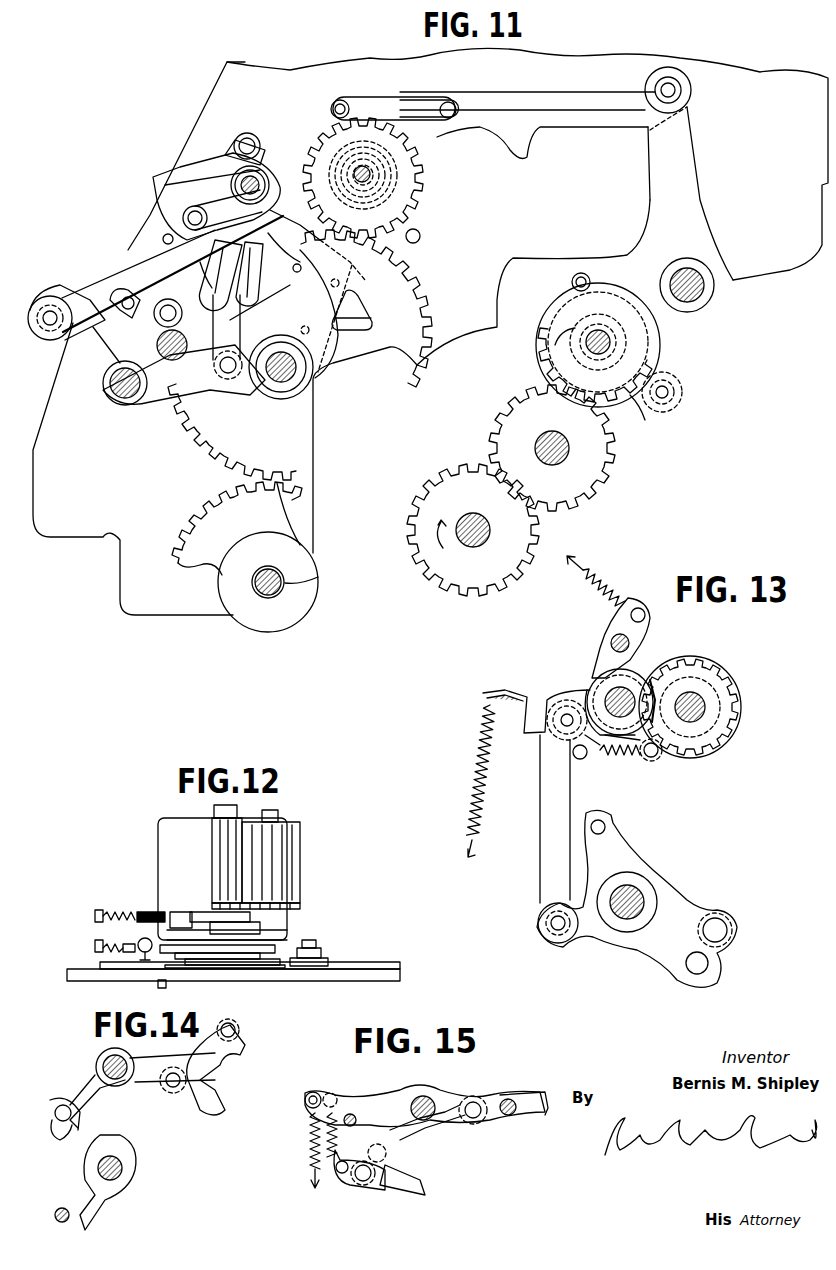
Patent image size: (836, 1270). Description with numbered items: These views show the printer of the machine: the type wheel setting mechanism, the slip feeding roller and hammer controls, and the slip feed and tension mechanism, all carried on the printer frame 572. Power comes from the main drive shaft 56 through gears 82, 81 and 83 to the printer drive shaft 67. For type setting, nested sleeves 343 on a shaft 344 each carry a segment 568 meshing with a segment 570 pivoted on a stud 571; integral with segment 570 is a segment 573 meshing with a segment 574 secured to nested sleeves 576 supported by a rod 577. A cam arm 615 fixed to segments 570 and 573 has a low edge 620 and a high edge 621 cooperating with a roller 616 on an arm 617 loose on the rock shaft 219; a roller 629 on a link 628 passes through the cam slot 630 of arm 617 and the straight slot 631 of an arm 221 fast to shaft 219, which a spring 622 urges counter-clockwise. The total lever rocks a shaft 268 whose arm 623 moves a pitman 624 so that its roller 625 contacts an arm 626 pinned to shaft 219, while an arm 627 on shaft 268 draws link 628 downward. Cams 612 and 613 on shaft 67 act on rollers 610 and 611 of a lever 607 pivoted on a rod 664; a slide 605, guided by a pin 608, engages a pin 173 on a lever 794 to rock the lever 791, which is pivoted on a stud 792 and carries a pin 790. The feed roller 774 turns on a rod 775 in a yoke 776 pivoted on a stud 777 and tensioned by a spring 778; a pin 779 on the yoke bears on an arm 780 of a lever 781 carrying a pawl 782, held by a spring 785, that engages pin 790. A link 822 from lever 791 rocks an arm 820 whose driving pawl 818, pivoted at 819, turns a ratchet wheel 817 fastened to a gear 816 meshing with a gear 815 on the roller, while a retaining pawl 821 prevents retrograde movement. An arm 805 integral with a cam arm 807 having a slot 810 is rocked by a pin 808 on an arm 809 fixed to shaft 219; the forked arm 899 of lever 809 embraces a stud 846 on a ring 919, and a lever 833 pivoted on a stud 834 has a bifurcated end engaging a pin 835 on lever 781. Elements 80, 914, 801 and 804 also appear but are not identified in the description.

In FIG. 11, the printer frame 572 is at (245, 65).
In FIG. 12, the printer frame 572 is at (76, 968).
In FIG. 11, the pin 173 is at (342, 100).
In FIG. 11, the lever 794 is at (362, 97).
In FIG. 11, the pin 608 is at (447, 102).
In FIG. 11, the slide 605 is at (533, 97).
In FIG. 11, the lever 607 is at (688, 165).
In FIG. 11, the rod 664 is at (681, 270).
In FIG. 11, the roller 610 is at (572, 282).
In FIG. 11, the cam 613 is at (560, 308).
In FIG. 11, the gear 83 is at (540, 340).
In FIG. 11, the printer drive shaft 67 is at (604, 355).
In FIG. 11, the gear 81 is at (513, 398).
In FIG. 11, the shaft 80 is at (552, 438).
In FIG. 11, the gear 82 is at (462, 475).
In FIG. 11, the main drive shaft 56 is at (470, 520).
In FIG. 11, the roller 611 is at (675, 385).
In FIG. 11, the cam 612 is at (650, 414).
In FIG. 11, the segment 574 is at (420, 185).
In FIG. 11, the nested sleeves 576 is at (330, 152).
In FIG. 11, the rod 577 is at (362, 182).
In FIG. 11, the spring 622 is at (425, 247).
In FIG. 11, the segment 573 is at (420, 302).
In FIG. 11, the segment 570 is at (212, 445).
In FIG. 11, the stud 571 is at (272, 385).
In FIG. 11, the segment 568 is at (192, 517).
In FIG. 11, the shaft 344 is at (270, 572).
In FIG. 11, the sleeve 343 is at (318, 577).
In FIG. 11, the shaft 268 is at (112, 395).
In FIG. 11, the arm 627 is at (163, 393).
In FIG. 11, the arm 221 is at (187, 342).
In FIG. 11, the arm 623 is at (65, 340).
In FIG. 11, the pitman 624 is at (95, 280).
In FIG. 11, the arm 626 is at (180, 192).
In FIG. 11, the roller 616 is at (185, 218).
In FIG. 11, the roller 625 is at (162, 240).
In FIG. 11, the rock shaft 219 is at (258, 182).
In FIG. 14, the rock shaft 219 is at (103, 1058).
In FIG. 11, the high edge 621 is at (280, 205).
In FIG. 11, the cam arm 615 is at (299, 220).
In FIG. 11, the roller 629 is at (291, 249).
In FIG. 11, the straight slot 631 is at (205, 268).
In FIG. 11, the arm 617 is at (262, 282).
In FIG. 11, the link 628 is at (242, 337).
In FIG. 11, the cam slot 630 is at (251, 311).
In FIG. 11, the low edge 620 is at (346, 309).
In FIG. 13, the retaining pawl 821 is at (608, 628).
In FIG. 13, the driving gear 816 is at (637, 652).
In FIG. 12, the driving gear 816 is at (212, 908).
In FIG. 13, the stud 777 is at (623, 698).
In FIG. 12, the stud 777 is at (222, 847).
In FIG. 14, the stud 777 is at (110, 1158).
In FIG. 15, the stud 777 is at (427, 1097).
In FIG. 13, the arm 820 is at (592, 690).
In FIG. 12, the arm 820 is at (250, 935).
In FIG. 13, the ratchet wheel 817 is at (663, 690).
In FIG. 12, the ratchet wheel 817 is at (216, 912).
In FIG. 13, the gear 815 is at (706, 673).
In FIG. 12, the gear 815 is at (296, 905).
In FIG. 13, the feed roller 774 is at (738, 700).
In FIG. 12, the feed roller 774 is at (292, 850).
In FIG. 13, the rod 775 is at (708, 715).
In FIG. 13, the pivot 819 is at (562, 725).
In FIG. 13, the yoke 776 is at (548, 702).
In FIG. 12, the yoke 776 is at (156, 840).
In FIG. 13, the driving pawl 818 is at (600, 758).
In FIG. 12, the driving pawl 818 is at (172, 912).
In FIG. 13, the spring 778 is at (486, 765).
In FIG. 12, the spring 778 is at (115, 912).
In FIG. 13, the link 822 is at (548, 845).
In FIG. 12, the link 822 is at (165, 922).
In FIG. 13, the lever 791 is at (672, 903).
In FIG. 13, the pin 790 is at (605, 823).
In FIG. 13, the stud 792 is at (632, 892).
In FIG. 12, the pin 779 is at (170, 960).
In FIG. 12, the pin 914 is at (165, 982).
In FIG. 15, the pin 914 is at (352, 1112).
In FIG. 12, the pawl 782 is at (192, 962).
In FIG. 15, the pawl 782 is at (405, 1180).
In FIG. 12, the lever 781 is at (255, 968).
In FIG. 15, the lever 781 is at (382, 1102).
In FIG. 12, the arm 805 is at (280, 947).
In FIG. 14, the arm 805 is at (98, 1203).
In FIG. 12, the stud 834 is at (314, 957).
In FIG. 15, the stud 834 is at (510, 1115).
In FIG. 12, the lever 833 is at (352, 962).
In FIG. 15, the lever 833 is at (540, 1092).
In FIG. 12, the spring 785 is at (138, 940).
In FIG. 15, the spring 785 is at (340, 1188).
In FIG. 12, the spring 801 is at (105, 946).
In FIG. 15, the spring 801 is at (310, 1145).
In FIG. 14, the arm 809 is at (85, 1070).
In FIG. 14, the cam arm 807 is at (58, 1103).
In FIG. 14, the pin 808 is at (56, 1113).
In FIG. 14, the slot 810 is at (62, 1140).
In FIG. 14, the pin 804 is at (62, 1208).
In FIG. 14, the arm 899 is at (152, 1070).
In FIG. 14, the stud 846 is at (182, 1080).
In FIG. 14, the ring 919 is at (205, 1105).
In FIG. 15, the pin 835 is at (473, 1118).
In FIG. 15, the arm 780 is at (405, 1140).